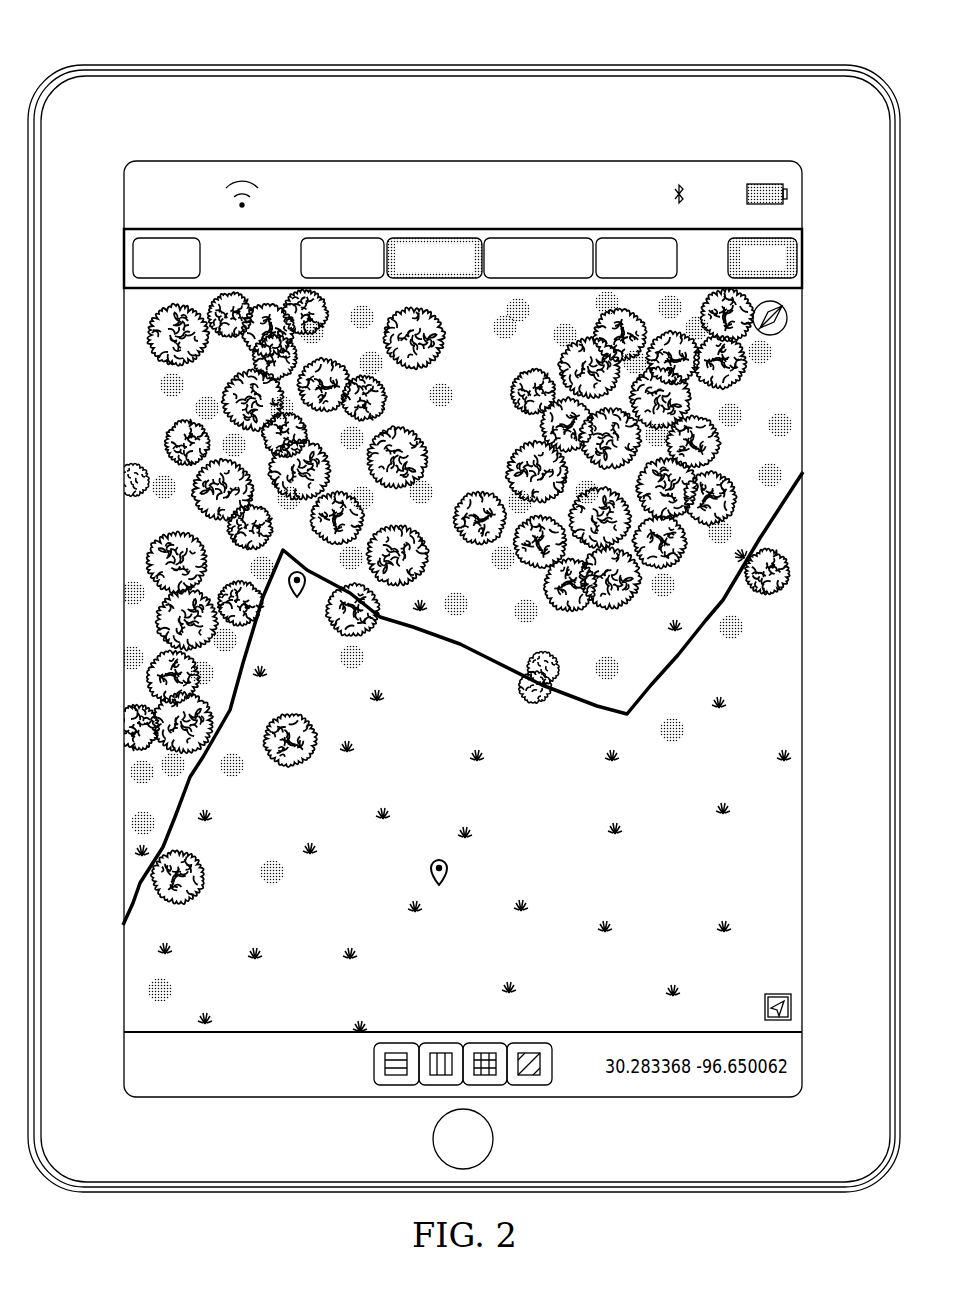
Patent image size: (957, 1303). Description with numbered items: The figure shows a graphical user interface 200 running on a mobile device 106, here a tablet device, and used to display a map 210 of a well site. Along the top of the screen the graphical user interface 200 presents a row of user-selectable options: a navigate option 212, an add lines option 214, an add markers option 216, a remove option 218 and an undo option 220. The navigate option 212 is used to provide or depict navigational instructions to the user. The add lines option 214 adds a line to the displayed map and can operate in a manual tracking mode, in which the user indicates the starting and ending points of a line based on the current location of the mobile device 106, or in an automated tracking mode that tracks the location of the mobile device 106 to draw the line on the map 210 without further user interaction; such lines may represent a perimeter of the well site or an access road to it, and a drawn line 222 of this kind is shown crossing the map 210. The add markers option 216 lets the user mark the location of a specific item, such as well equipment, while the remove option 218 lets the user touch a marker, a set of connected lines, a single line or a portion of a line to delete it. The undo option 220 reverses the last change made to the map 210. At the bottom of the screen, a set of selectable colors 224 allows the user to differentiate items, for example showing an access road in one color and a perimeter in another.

The mobile device 106 is at (595, 62).
The graphical user interface 200 is at (112, 238).
The map 210 is at (494, 452).
The navigate option 212 is at (331, 240).
The add lines option 214 is at (401, 240).
The add markers option 216 is at (556, 240).
The remove option 218 is at (621, 240).
The undo option 220 is at (797, 256).
The boundary line drawn on map 222 is at (466, 648).
The colors 224 is at (362, 1046).